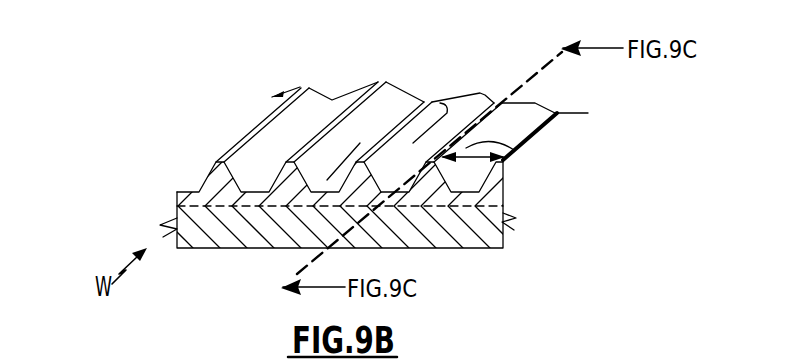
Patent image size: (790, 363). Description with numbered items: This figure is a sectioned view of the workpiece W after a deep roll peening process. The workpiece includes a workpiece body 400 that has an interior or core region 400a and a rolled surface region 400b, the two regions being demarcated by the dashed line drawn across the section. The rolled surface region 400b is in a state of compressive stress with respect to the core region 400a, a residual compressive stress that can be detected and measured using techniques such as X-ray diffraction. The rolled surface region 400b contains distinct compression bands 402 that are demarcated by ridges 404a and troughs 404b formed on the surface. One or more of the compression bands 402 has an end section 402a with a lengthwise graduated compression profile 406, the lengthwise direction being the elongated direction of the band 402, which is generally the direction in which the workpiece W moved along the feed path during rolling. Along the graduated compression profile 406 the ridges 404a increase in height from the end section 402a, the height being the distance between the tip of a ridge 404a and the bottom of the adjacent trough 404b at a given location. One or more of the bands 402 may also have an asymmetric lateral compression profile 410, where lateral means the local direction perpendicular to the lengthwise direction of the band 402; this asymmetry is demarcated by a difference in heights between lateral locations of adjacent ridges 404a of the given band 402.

The workpiece body 400 is at (577, 188).
The core region 400a is at (213, 246).
The rolled surface region 400b is at (212, 183).
The compression band 402 is at (388, 82).
The end section 402a is at (301, 184).
The ridge 404a is at (323, 127).
The trough 404b is at (265, 178).
The lengthwise graduated compression profile 406 is at (470, 132).
The asymmetric lateral compression profile 410 is at (512, 150).